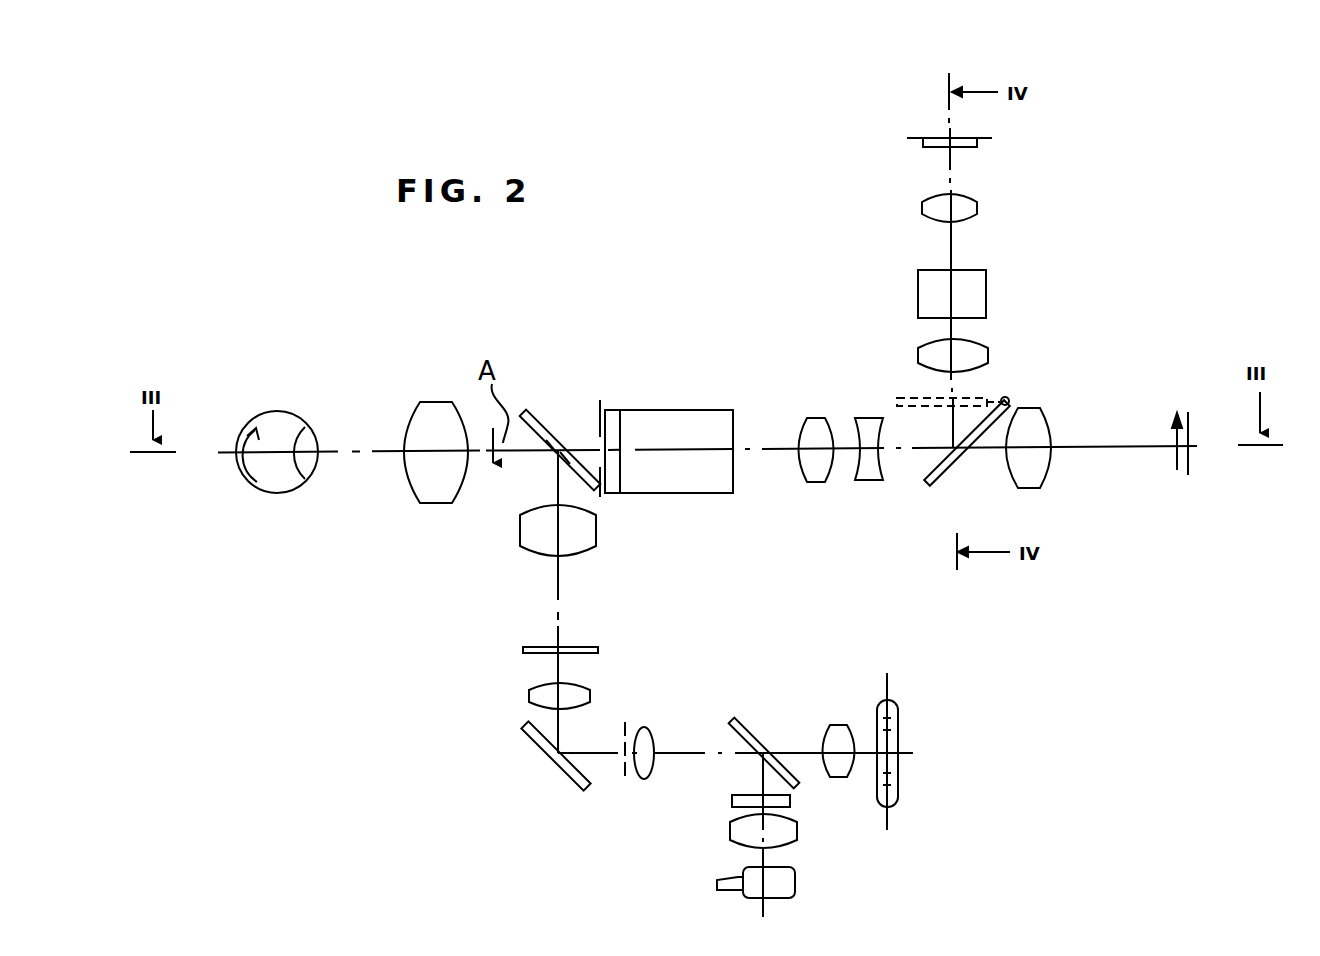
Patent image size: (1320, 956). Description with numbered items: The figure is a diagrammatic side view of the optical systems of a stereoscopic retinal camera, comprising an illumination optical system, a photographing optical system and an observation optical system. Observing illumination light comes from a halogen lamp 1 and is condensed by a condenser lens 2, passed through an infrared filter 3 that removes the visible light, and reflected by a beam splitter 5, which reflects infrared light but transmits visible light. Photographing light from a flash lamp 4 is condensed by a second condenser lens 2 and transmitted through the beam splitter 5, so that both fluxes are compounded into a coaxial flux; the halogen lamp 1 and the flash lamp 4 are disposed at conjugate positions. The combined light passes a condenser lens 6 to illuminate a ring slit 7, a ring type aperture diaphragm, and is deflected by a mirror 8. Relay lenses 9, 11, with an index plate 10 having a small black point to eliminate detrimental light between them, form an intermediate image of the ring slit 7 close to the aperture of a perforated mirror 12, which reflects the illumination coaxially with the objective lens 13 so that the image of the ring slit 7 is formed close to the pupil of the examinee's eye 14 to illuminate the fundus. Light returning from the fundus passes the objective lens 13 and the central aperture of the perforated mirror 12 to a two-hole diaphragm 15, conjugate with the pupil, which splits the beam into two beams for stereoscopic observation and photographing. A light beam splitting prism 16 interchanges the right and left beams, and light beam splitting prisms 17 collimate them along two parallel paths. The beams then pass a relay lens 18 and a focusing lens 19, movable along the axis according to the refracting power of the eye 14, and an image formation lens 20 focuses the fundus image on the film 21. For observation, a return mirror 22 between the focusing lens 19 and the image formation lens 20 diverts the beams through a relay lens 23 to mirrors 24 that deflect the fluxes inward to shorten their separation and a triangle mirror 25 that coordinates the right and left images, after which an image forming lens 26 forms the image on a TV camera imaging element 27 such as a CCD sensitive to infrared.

The halogen lamp 1 is at (788, 886).
The condenser lens 2 is at (790, 833).
The infrared filter 3 is at (730, 803).
The flash lamp 4 is at (893, 740).
The beam splitter 5 is at (746, 728).
The condenser lens 6 is at (650, 745).
The ring slit 7 is at (625, 782).
The mirror 8 is at (572, 772).
The relay lens 9 is at (585, 695).
The index plate 10 is at (522, 655).
The relay lens 11 is at (535, 550).
The perforated mirror 12 is at (556, 428).
The objective lens 13 is at (440, 503).
The examinee's eye 14 is at (268, 493).
The two-hole diaphragm 15 is at (593, 405).
The light beam splitting prism 16 is at (612, 492).
The light beam splitting prisms 17 is at (680, 418).
The relay lens 18 is at (815, 430).
The focusing lens 19 is at (867, 481).
The image formation lens 20 is at (1037, 476).
The film 21 is at (1185, 473).
The return mirror 22 is at (958, 455).
The relay lens 23 is at (982, 356).
The mirror 24 is at (1013, 294).
The triangle mirror 25 is at (984, 295).
The image forming lens 26 is at (975, 206).
The TV camera imaging element 27 is at (985, 140).